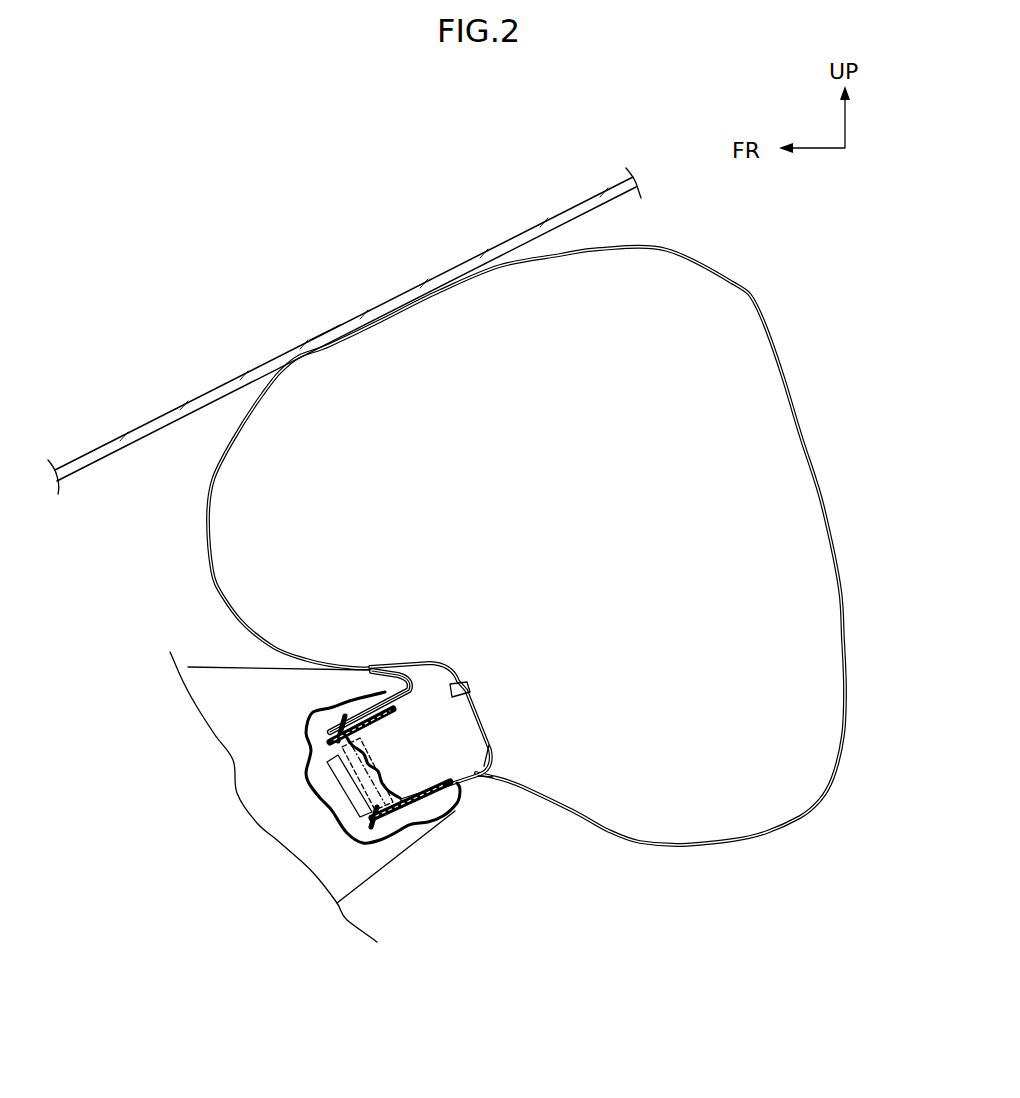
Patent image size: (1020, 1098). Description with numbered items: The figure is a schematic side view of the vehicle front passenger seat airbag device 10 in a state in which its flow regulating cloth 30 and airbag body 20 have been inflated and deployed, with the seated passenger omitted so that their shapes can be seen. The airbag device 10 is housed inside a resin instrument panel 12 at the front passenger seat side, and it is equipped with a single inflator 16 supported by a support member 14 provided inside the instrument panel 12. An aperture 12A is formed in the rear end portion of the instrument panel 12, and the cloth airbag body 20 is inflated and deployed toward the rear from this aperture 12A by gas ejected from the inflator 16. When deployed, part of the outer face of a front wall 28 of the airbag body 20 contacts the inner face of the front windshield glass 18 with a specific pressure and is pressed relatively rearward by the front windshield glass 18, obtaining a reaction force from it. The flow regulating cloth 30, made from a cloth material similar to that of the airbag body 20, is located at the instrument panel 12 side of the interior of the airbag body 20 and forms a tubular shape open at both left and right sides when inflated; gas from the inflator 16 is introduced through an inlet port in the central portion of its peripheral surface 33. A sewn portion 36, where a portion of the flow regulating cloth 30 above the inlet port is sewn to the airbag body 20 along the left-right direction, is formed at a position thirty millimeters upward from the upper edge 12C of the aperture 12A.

The vehicle front passenger seat airbag device 10 is at (492, 786).
The instrument panel 12 is at (221, 665).
The aperture 12A is at (472, 773).
The upper edge 12C is at (414, 668).
The support member 14 is at (320, 740).
The inflator 16 is at (343, 800).
The front windshield glass 18 is at (230, 378).
The airbag body 20 is at (795, 420).
The front wall 28 is at (335, 336).
The flow regulating cloth 30 is at (487, 717).
The peripheral surface 33 is at (495, 753).
The sewn portion 36 is at (370, 668).